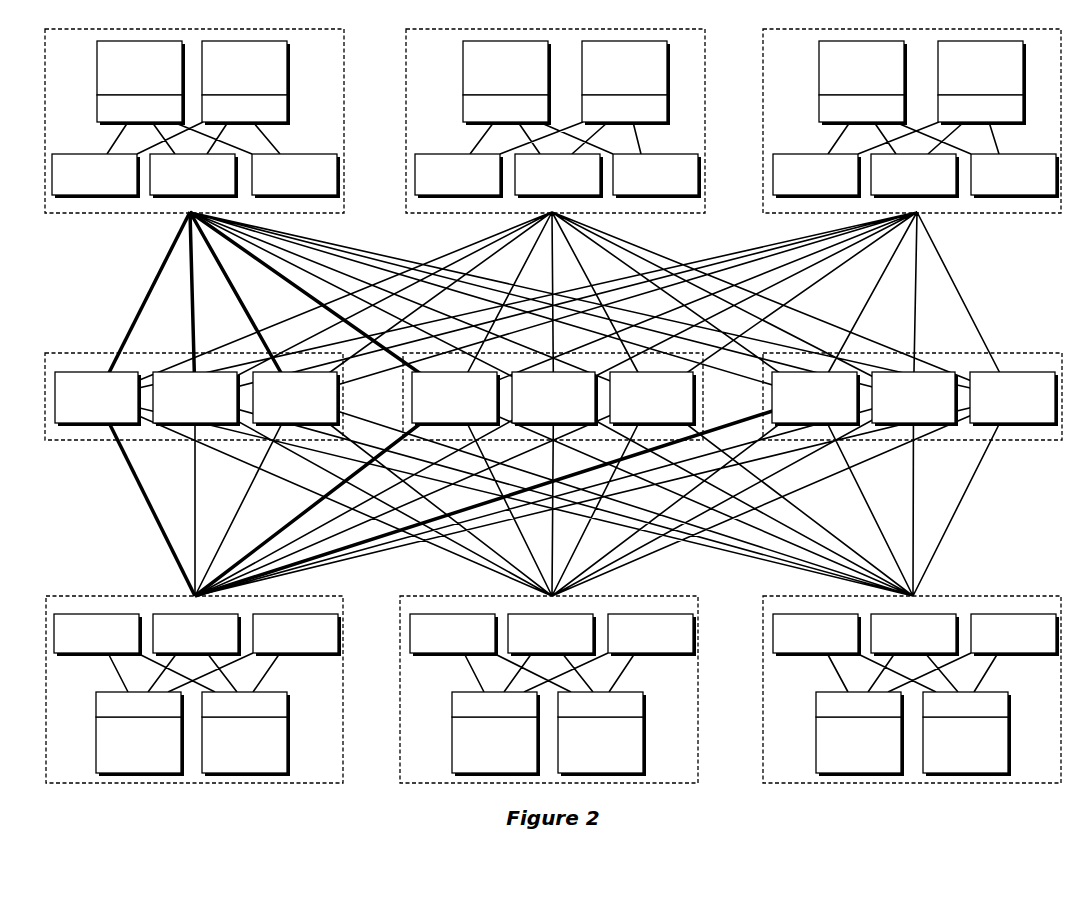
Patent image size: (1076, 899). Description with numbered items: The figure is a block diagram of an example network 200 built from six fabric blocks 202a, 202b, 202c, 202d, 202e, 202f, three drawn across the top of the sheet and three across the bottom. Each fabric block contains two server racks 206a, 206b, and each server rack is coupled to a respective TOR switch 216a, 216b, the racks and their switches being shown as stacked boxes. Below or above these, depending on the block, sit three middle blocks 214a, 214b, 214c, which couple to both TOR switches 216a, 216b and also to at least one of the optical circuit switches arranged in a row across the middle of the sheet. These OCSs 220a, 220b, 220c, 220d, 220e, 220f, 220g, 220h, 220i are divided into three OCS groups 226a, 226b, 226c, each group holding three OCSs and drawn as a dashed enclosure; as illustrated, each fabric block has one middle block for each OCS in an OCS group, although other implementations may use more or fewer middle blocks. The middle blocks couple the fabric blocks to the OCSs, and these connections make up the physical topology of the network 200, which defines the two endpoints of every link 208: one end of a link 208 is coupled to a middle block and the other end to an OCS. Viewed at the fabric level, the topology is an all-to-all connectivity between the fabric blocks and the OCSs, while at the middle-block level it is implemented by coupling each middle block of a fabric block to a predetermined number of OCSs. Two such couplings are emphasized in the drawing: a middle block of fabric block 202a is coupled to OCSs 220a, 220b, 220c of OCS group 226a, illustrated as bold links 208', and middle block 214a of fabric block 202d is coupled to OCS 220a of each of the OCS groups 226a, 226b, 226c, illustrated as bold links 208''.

The network 200 is at (539, 23).
The fabric block 202a is at (194, 121).
The fabric block 202b is at (555, 121).
The fabric block 202c is at (912, 121).
The fabric block 202d is at (194, 689).
The fabric block 202e is at (549, 689).
The fabric block 202f is at (912, 689).
The server rack 206a is at (501, 408).
The server rack 206b is at (614, 408).
The TOR switch 216a is at (500, 406).
The TOR switch 216b is at (612, 406).
The middle block 214a is at (456, 405).
The middle block 214b is at (554, 405).
The middle block 214c is at (655, 405).
The link 208 is at (555, 404).
The bold links 208' is at (138, 305).
The bold links 208'' is at (136, 497).
The OCS 220a is at (98, 399).
The OCS 220b is at (196, 399).
The OCS 220c is at (296, 399).
The OCS 220d is at (456, 399).
The OCS 220e is at (555, 399).
The OCS 220f is at (653, 399).
The OCS 220g is at (816, 399).
The OCS 220h is at (915, 399).
The OCS 220i is at (1014, 399).
The OCS group 226a is at (95, 441).
The OCS group 226b is at (405, 421).
The OCS group 226c is at (970, 443).